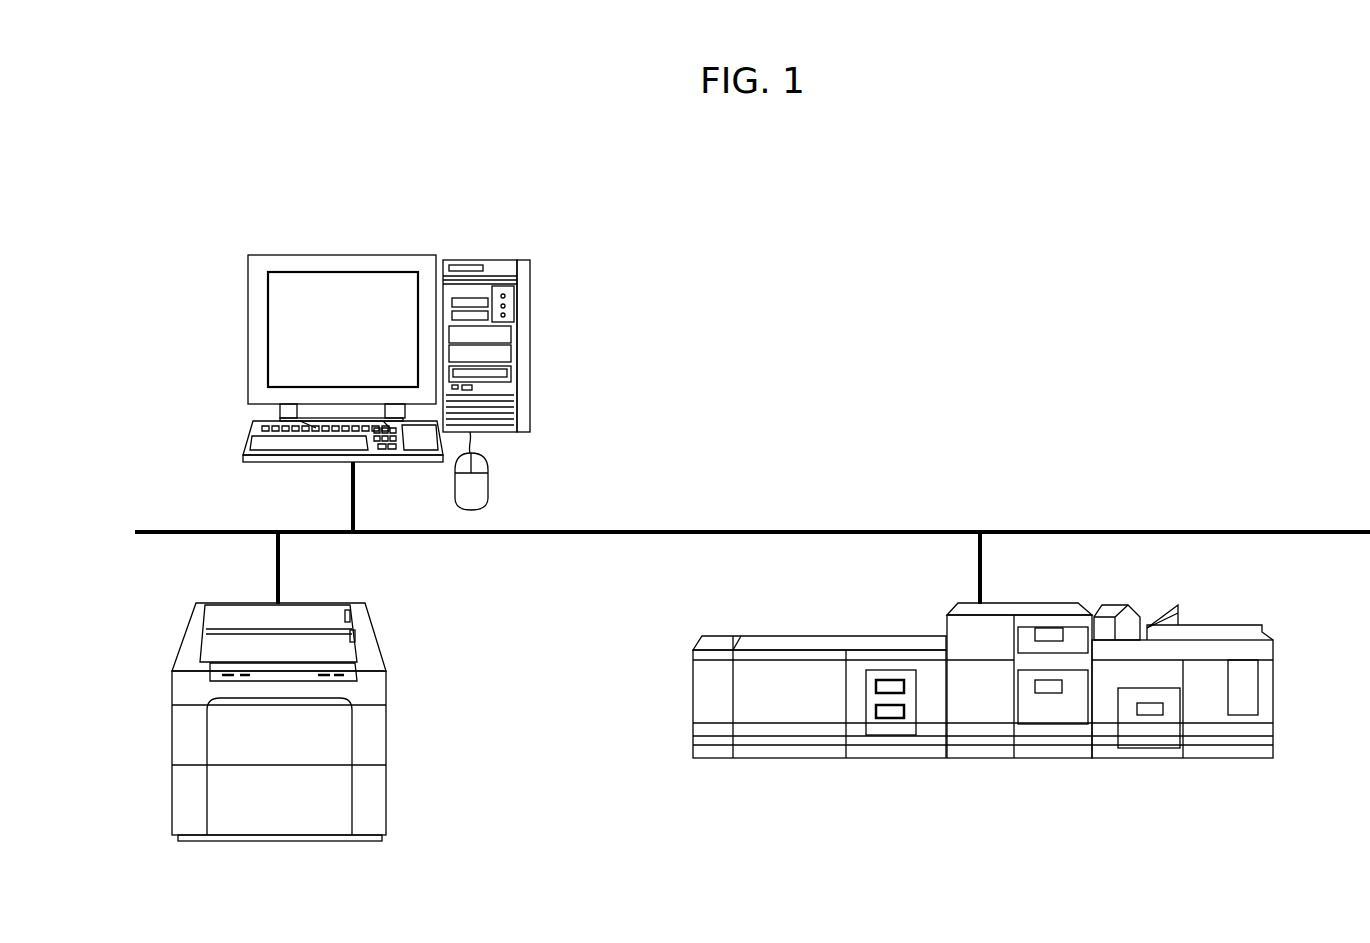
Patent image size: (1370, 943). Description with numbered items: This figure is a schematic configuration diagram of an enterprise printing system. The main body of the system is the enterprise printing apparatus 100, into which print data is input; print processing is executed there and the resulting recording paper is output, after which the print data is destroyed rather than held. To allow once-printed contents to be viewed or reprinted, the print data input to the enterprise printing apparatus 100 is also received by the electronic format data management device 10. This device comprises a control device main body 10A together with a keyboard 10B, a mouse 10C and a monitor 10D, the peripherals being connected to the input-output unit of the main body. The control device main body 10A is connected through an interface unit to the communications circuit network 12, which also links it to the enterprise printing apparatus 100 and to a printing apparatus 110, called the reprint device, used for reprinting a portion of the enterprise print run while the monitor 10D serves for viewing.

The electronic format data management device 10 is at (395, 356).
The control device main body 10A is at (502, 270).
The keyboard 10B is at (275, 441).
The mouse 10C is at (478, 487).
The monitor 10D is at (321, 267).
The communications circuit network 12 is at (705, 530).
The enterprise printing apparatus 100 is at (1133, 758).
The printing apparatus 110 is at (407, 722).